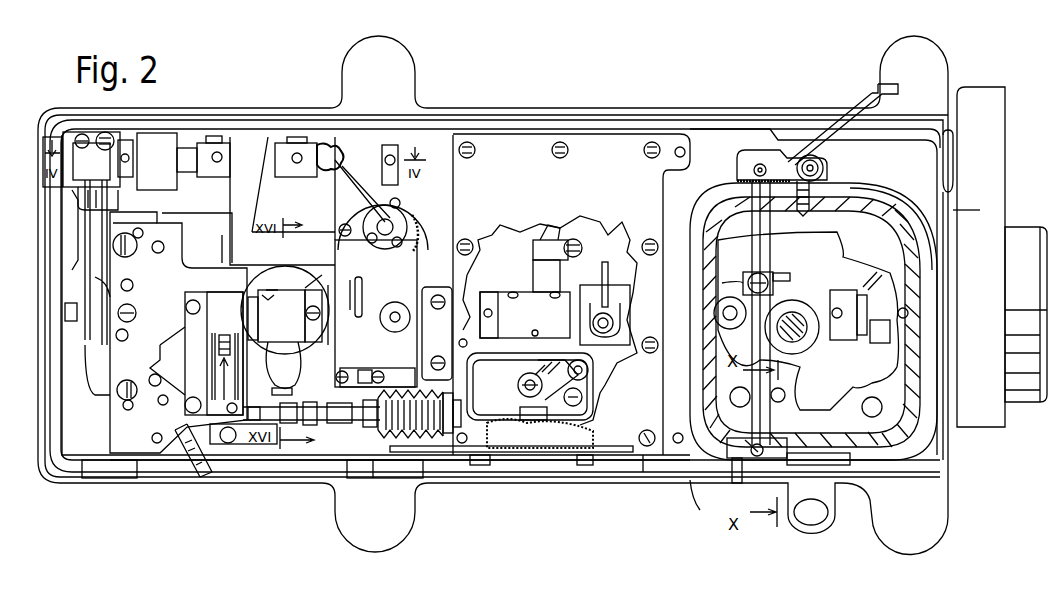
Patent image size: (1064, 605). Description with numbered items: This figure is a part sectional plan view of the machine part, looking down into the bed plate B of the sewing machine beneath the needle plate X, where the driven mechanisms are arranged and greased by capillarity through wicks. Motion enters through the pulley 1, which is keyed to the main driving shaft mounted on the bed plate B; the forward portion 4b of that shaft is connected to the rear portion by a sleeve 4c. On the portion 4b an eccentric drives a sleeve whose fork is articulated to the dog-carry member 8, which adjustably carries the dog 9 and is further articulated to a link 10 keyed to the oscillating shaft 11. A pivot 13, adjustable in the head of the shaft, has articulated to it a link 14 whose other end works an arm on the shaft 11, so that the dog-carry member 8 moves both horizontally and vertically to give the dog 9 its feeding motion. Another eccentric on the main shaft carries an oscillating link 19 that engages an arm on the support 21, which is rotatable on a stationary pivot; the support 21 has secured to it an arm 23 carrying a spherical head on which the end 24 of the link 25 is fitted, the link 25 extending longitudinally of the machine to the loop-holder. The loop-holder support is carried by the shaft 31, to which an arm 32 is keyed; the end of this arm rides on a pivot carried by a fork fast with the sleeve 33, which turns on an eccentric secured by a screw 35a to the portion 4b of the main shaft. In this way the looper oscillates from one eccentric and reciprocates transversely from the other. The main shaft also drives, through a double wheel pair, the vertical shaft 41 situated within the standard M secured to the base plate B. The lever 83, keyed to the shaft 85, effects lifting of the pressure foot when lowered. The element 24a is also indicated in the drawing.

The pulley 1 is at (1030, 238).
The dog-carry member 8 is at (245, 197).
The dog 9 is at (210, 340).
The link 10 is at (228, 153).
The oscillating shaft 11 is at (185, 153).
The pivot 13 is at (87, 292).
The link 14 is at (100, 200).
The oscillating link 19 is at (615, 330).
The support 21 is at (595, 230).
The arm 23 is at (520, 375).
The end of link 24 is at (292, 428).
The block 24a is at (533, 420).
The link 25 is at (241, 428).
The shaft 31 is at (323, 427).
The arm 32 is at (297, 430).
The sleeve 33 is at (268, 303).
The screw 35a is at (310, 322).
The forward portion of main driving shaft 4b is at (322, 275).
The sleeve 4c is at (527, 305).
The vertical shaft 41 is at (803, 335).
The lever 83 is at (862, 100).
The shaft 85 is at (766, 245).
The standard M is at (917, 413).
The bed plate B is at (702, 503).
The needle plate X is at (193, 328).